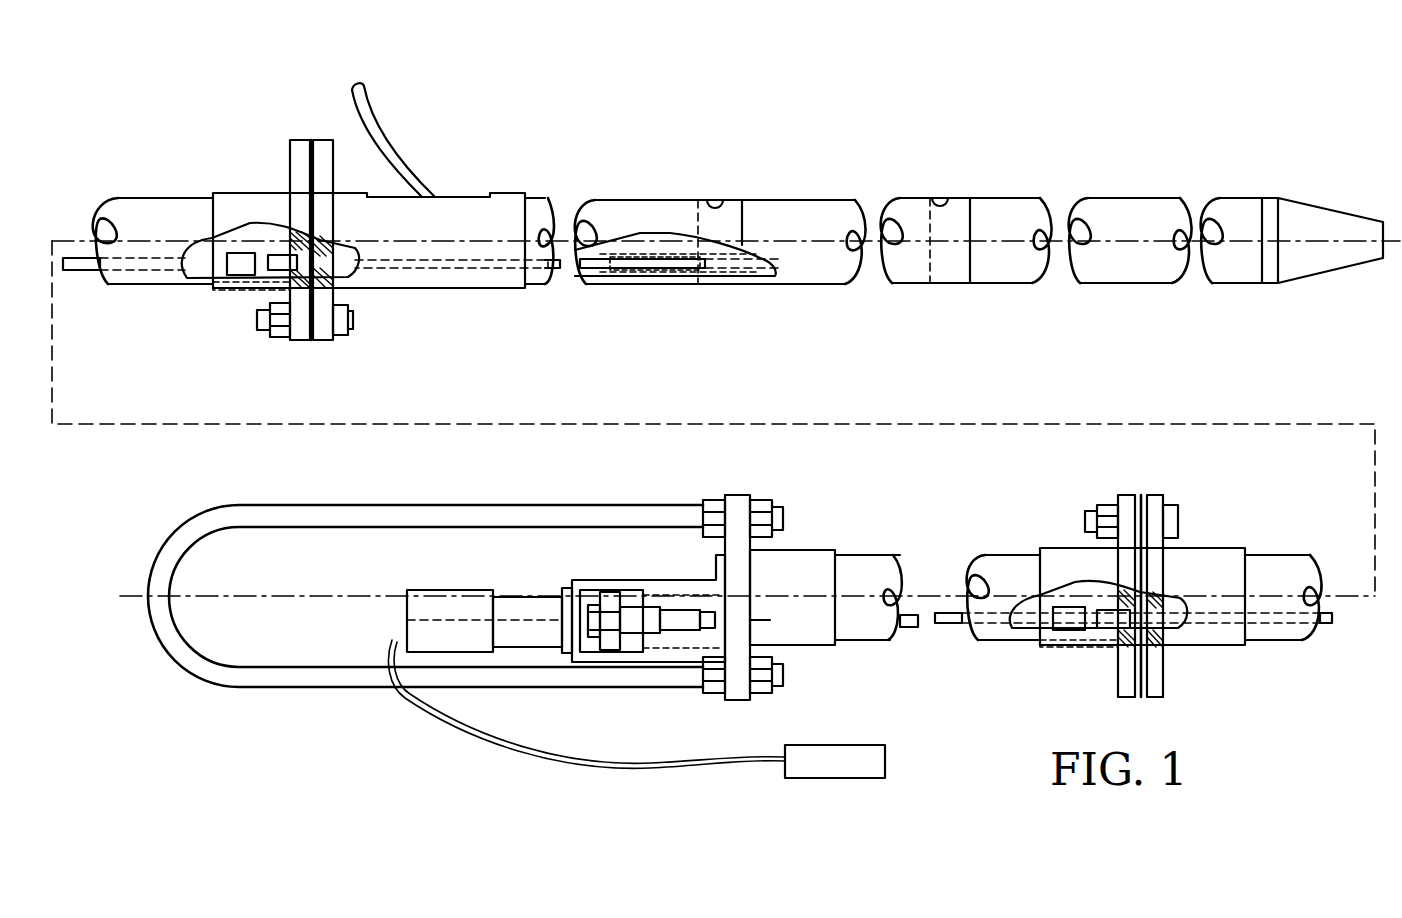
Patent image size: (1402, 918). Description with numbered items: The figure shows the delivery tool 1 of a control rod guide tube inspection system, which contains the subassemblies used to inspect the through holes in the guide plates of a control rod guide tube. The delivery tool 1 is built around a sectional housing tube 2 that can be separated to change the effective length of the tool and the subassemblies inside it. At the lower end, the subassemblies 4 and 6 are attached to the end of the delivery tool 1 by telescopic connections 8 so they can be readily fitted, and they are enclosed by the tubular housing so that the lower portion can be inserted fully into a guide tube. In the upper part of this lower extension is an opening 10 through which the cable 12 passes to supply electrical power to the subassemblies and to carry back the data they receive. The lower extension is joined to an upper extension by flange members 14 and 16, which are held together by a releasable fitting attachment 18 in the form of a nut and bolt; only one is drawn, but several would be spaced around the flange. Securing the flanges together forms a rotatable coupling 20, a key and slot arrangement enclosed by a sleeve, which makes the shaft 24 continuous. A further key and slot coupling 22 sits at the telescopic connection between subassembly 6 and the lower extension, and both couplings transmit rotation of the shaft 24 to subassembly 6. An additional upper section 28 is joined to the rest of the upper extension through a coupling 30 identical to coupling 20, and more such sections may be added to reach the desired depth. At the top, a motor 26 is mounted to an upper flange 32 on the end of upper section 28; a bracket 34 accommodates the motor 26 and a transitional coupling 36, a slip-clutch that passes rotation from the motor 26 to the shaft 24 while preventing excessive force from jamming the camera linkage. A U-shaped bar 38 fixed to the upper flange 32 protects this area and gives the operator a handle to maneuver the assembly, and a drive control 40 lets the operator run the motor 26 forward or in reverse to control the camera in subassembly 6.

The delivery tool 1 is at (562, 150).
The sectional housing tube 2 is at (1000, 197).
The subassembly 4 is at (1140, 197).
The subassembly 6 is at (800, 197).
The telescopic connection 8 is at (707, 200).
The opening 10 is at (477, 195).
The cable 12 is at (358, 90).
The flange member 14 is at (290, 172).
The flange member 16 is at (323, 140).
The releasable fitting attachment 18 is at (262, 337).
The coupling 20 is at (240, 287).
The key and slot coupling 22 is at (672, 288).
The rotatable shaft 24 is at (80, 268).
The motor 26 is at (405, 612).
The upper section 28 is at (1000, 555).
The coupling 30 is at (1080, 642).
The upper flange 32 is at (740, 495).
The bracket 34 is at (657, 580).
The transitional coupling 36 is at (612, 640).
The U-shaped bar 38 is at (148, 628).
The drive control 40 is at (885, 761).